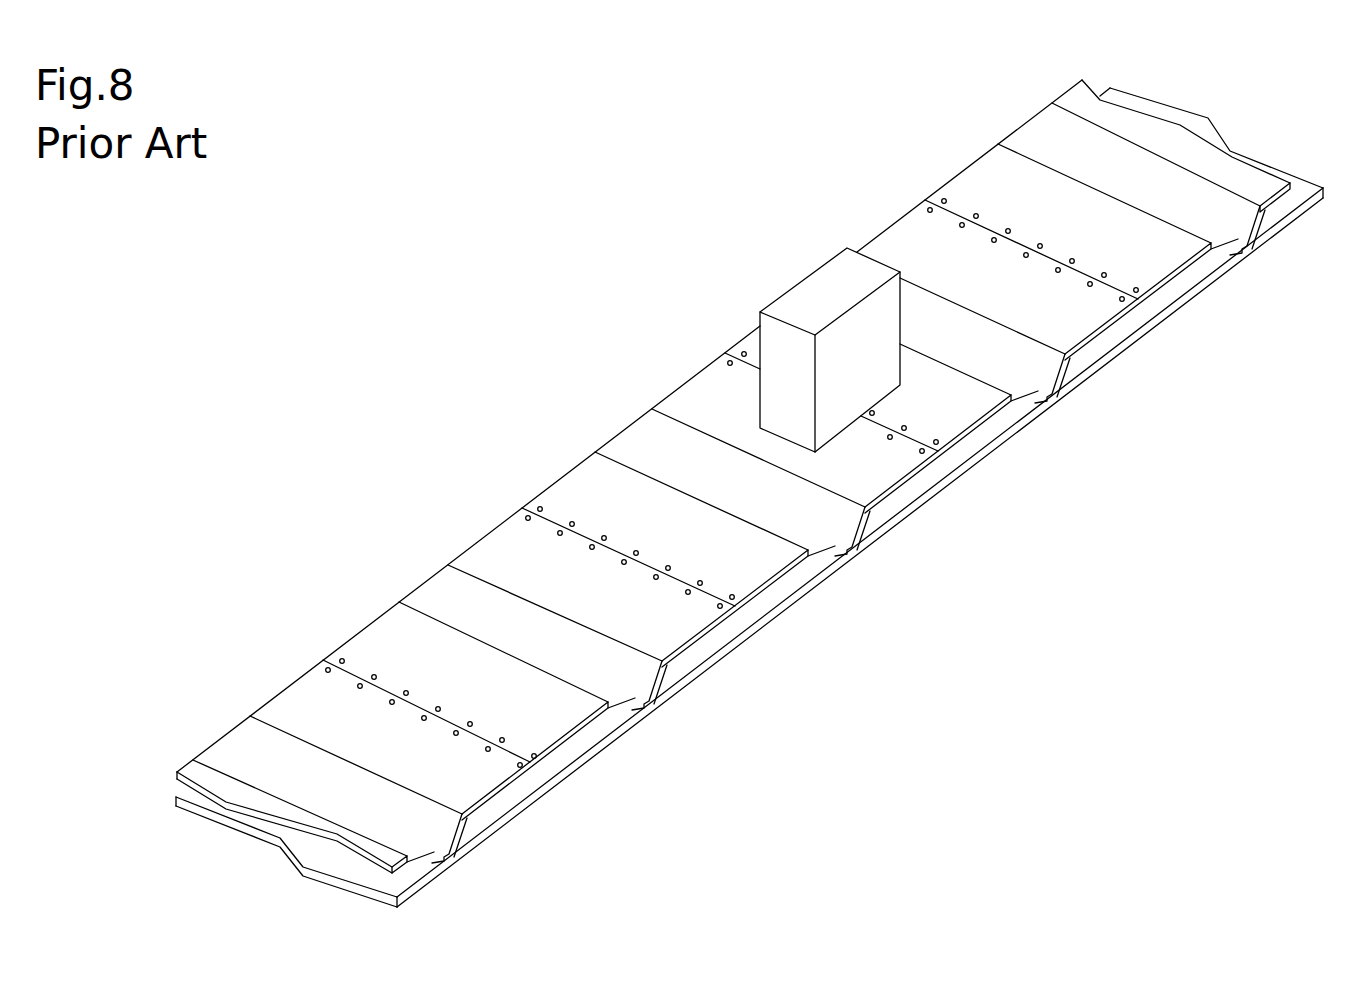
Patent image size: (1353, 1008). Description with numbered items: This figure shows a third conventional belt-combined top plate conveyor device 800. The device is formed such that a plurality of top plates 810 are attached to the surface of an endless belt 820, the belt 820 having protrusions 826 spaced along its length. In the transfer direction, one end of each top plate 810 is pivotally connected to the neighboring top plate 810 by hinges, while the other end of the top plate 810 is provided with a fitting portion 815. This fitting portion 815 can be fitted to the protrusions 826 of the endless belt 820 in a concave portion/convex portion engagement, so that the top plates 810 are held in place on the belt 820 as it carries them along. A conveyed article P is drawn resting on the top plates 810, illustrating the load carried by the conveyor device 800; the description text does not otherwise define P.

The top plate conveyor device 800 is at (962, 630).
The top plate 810 is at (578, 488).
The fitting portion 815 is at (816, 568).
The endless belt 820 is at (722, 658).
The protrusion 826 is at (855, 546).
The package / component P is at (818, 273).